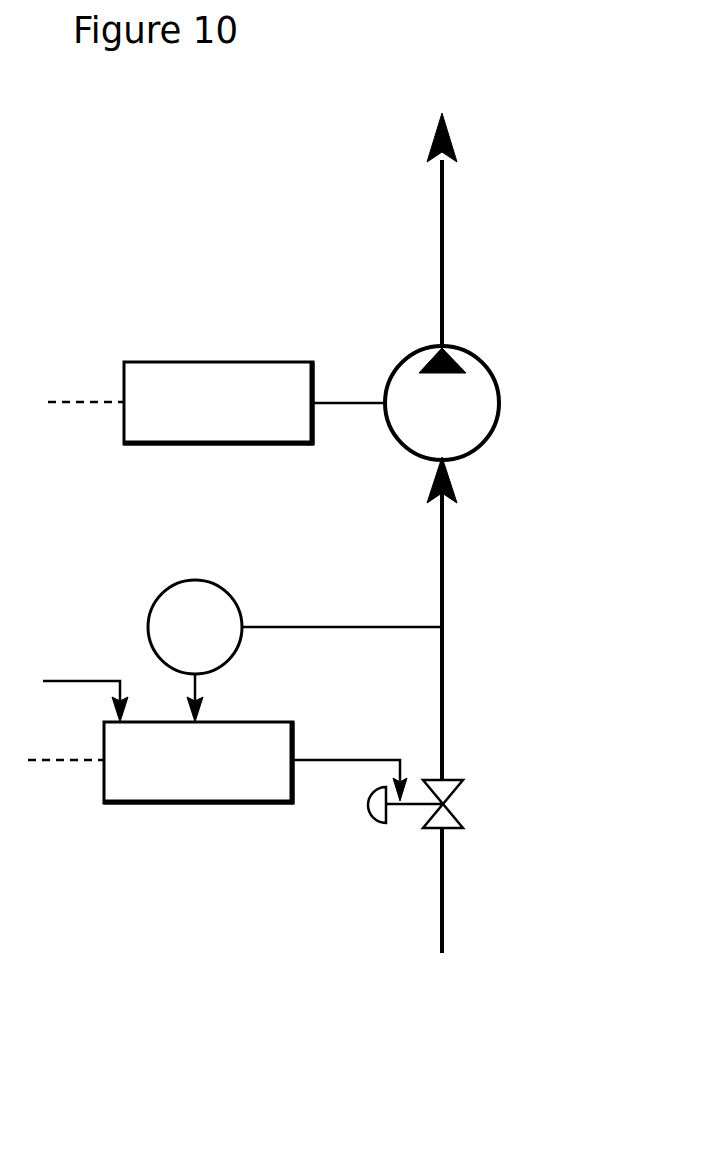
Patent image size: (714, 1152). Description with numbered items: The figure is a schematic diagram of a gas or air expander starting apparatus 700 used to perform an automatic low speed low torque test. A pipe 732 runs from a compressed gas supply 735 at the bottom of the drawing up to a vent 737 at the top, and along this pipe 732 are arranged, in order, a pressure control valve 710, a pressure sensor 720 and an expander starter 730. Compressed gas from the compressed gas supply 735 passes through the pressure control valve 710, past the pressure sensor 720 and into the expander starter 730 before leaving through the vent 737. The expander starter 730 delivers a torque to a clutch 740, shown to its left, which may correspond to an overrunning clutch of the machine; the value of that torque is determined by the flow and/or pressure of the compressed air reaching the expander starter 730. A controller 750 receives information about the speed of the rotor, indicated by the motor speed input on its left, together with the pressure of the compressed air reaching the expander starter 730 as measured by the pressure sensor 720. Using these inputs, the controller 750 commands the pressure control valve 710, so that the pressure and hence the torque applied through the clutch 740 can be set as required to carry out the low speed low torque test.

The expander starting apparatus 700 is at (146, 196).
The pressure control valve 710 is at (457, 820).
The pressure sensor 720 is at (223, 590).
The expander starter 730 is at (478, 405).
The pipe 732 is at (446, 655).
The compressed gas supply 735 is at (454, 945).
The vent 737 is at (445, 117).
The clutch 740 is at (185, 380).
The controller 750 is at (175, 805).